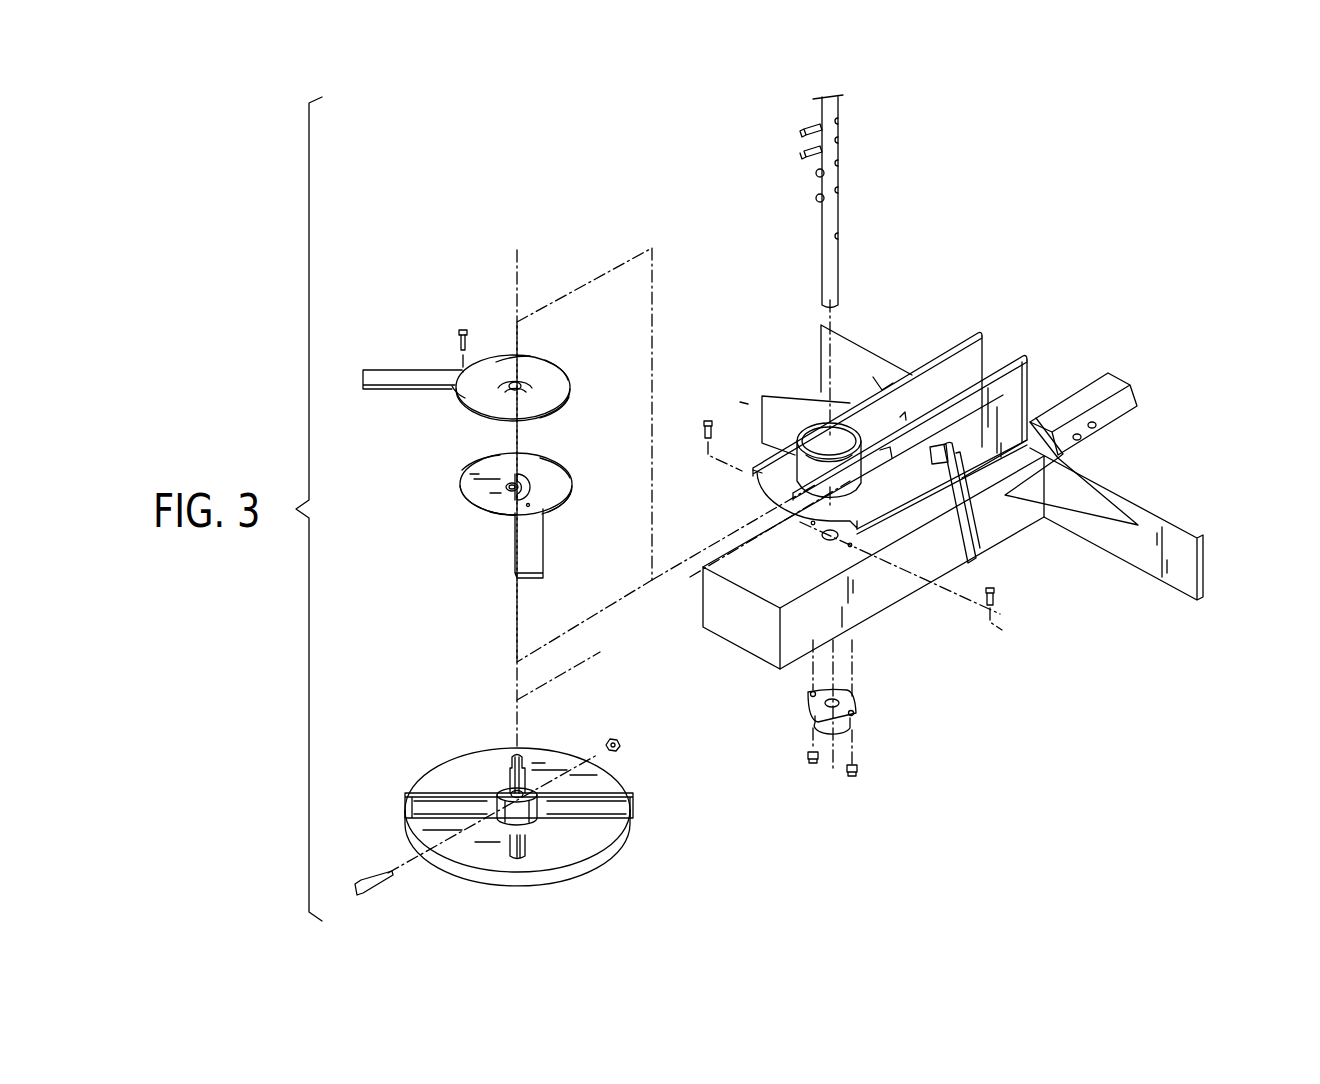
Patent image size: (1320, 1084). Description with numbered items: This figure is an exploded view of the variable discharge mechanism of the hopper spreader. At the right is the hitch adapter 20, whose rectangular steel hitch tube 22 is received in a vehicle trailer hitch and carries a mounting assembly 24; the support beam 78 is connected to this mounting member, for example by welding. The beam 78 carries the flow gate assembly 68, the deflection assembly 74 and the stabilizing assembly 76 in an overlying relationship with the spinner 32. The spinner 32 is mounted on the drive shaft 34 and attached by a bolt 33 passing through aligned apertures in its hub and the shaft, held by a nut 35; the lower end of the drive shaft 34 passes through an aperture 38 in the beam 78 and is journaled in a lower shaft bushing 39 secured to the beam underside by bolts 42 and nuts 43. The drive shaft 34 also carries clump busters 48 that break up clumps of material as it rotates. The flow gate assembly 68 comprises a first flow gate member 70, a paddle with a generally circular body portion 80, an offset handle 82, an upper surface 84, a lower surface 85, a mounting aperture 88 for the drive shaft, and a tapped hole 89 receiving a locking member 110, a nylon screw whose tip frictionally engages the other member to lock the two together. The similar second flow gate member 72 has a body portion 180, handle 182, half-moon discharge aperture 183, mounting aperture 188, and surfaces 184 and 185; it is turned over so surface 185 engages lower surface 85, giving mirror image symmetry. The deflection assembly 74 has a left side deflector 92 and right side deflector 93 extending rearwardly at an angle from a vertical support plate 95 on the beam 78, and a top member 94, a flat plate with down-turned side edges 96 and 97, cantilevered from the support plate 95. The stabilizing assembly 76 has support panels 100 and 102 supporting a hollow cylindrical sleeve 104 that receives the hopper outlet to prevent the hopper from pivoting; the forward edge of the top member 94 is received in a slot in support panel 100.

The hitch adapter 20 is at (1125, 439).
The hitch tube 22 is at (1130, 410).
The mounting assembly 24 is at (1173, 522).
The spinner 32 is at (466, 762).
The bolt 33 is at (358, 882).
The drive shaft 34 is at (832, 283).
The nut 35 is at (620, 748).
The aperture 38 is at (826, 540).
The lower shaft bushing 39 is at (845, 697).
The bolts 42 is at (704, 418).
The nuts 43 is at (852, 772).
The clump busters 48 is at (812, 151).
The flow gate assembly 68 is at (407, 525).
The first flow gate member 70 is at (490, 410).
The second flow gate member 72 is at (455, 478).
The deflection assembly 74 is at (745, 400).
The stabilizing assembly 76 is at (865, 381).
The support beam 78 is at (883, 602).
The body portion 80 is at (496, 362).
The handle 82 is at (386, 375).
The upper surface 84 is at (562, 378).
The lower surface 85 is at (566, 404).
The mounting aperture 88 is at (523, 379).
The tapped hole 89 is at (452, 386).
The left side deflector 92 is at (780, 402).
The right side deflector 93 is at (977, 538).
The top member 94 is at (775, 498).
The support plate 95 is at (928, 453).
The down-turned side edge 96 is at (770, 474).
The down-turned side edge 97 is at (900, 505).
The support panel 100 is at (950, 357).
The support panel 102 is at (1030, 348).
The sleeve 104 is at (843, 435).
The locking member 110 is at (460, 328).
The body portion 180 is at (543, 462).
The handle 182 is at (541, 573).
The discharge aperture 183 is at (560, 482).
The surface 184 is at (568, 514).
The surface 185 is at (500, 515).
The mounting aperture 188 is at (510, 489).